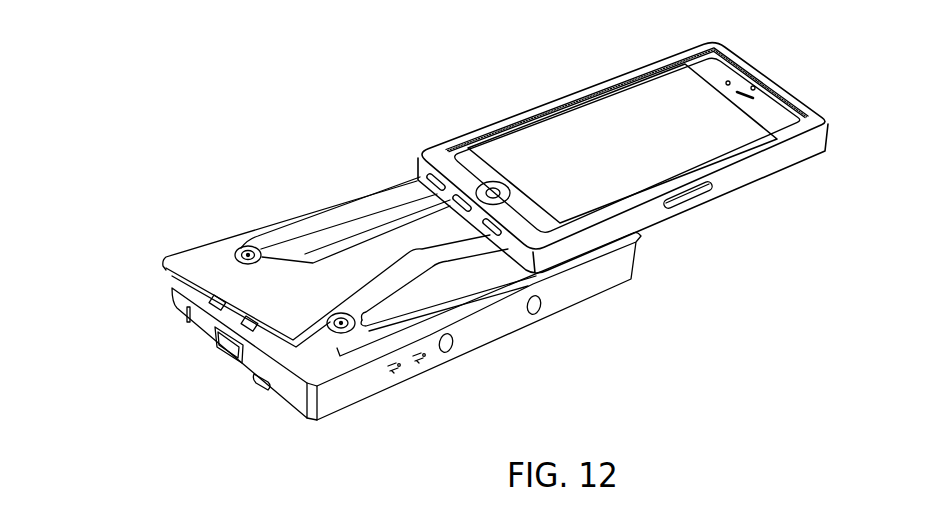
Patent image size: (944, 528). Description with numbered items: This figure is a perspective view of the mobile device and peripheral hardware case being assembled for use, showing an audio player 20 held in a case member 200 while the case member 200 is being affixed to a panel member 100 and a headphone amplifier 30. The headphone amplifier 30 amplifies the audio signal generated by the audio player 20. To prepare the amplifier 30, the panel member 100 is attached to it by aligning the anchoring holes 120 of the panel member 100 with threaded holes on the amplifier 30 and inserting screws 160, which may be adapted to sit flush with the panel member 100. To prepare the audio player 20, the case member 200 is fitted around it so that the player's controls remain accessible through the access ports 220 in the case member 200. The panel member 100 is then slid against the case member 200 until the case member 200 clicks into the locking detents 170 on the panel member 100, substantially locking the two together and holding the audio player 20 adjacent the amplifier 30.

The audio player 20 is at (783, 110).
The headphone amplifier 30 is at (573, 284).
The panel member 100 is at (216, 261).
The anchoring holes 120 is at (259, 210).
The screws 160 is at (246, 245).
The locking detent 170 is at (216, 326).
The case member 200 is at (778, 158).
The access ports 220 is at (688, 208).